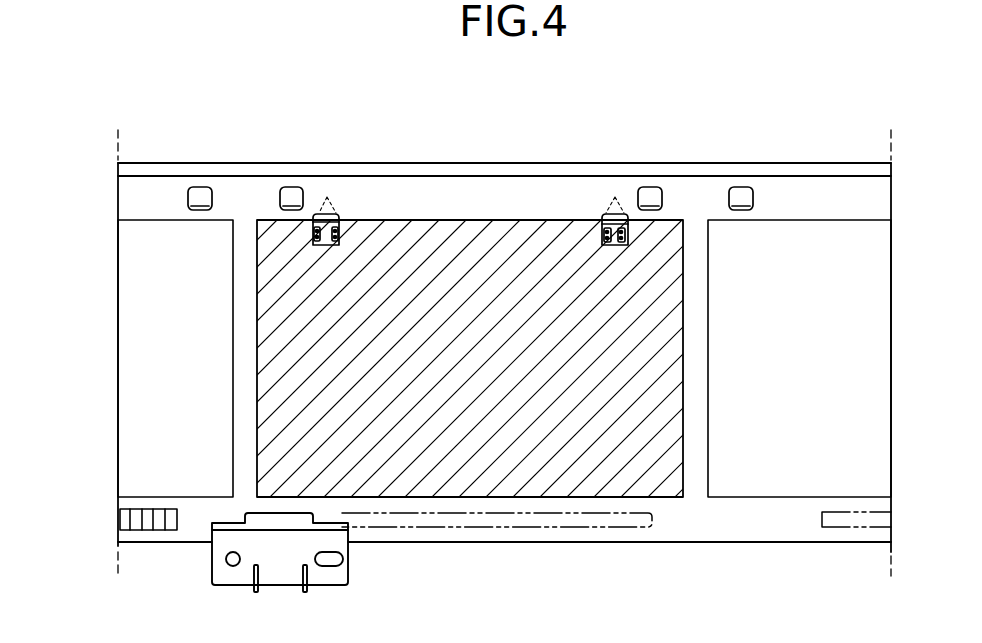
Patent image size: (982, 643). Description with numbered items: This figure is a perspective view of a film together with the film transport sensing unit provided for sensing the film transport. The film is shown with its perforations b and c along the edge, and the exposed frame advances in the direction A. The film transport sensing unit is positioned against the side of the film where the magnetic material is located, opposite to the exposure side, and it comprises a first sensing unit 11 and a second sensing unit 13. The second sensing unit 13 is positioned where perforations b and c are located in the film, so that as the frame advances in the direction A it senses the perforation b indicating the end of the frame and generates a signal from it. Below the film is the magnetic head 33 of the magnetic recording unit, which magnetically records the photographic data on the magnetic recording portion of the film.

The first sensing unit 11 is at (337, 217).
The second sensing unit 13 is at (607, 215).
The magnetic head 33 is at (331, 577).
The perforation b is at (650, 187).
The perforation c is at (741, 187).
The direction A is at (112, 347).